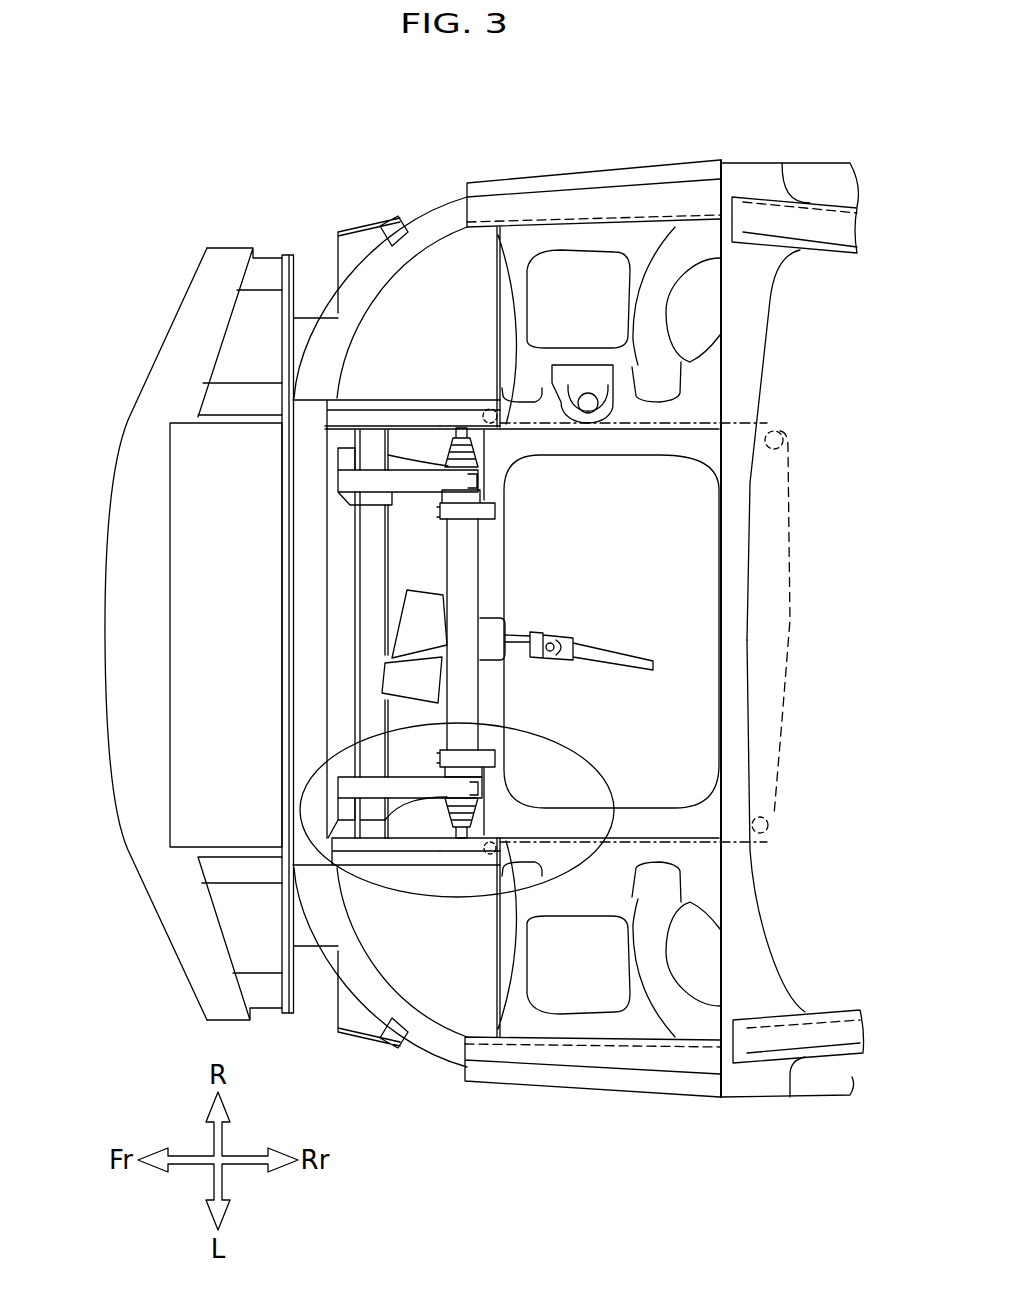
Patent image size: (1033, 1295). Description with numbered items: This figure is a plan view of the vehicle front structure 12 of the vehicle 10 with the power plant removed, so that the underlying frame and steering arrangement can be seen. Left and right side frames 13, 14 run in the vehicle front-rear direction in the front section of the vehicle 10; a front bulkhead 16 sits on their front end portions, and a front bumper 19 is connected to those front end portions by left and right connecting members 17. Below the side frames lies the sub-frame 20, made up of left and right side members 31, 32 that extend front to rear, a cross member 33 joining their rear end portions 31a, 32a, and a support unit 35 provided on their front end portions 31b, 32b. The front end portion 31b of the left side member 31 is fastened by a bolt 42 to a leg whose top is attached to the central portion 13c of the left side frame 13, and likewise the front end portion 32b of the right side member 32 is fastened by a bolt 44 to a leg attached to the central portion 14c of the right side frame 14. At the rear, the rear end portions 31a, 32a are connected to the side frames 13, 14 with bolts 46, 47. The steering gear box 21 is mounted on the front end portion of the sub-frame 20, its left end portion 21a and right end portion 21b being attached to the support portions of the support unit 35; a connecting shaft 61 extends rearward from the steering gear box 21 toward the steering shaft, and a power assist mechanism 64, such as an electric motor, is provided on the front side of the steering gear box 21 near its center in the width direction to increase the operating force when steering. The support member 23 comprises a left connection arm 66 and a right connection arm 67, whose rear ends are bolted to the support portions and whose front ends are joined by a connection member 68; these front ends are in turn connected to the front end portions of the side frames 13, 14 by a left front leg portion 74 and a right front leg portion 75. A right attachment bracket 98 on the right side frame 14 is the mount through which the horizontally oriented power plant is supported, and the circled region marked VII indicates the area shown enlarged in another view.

The vehicle 10 is at (213, 150).
The vehicle front structure 12 is at (380, 195).
The left side frame 13 is at (378, 853).
The central portion of the left side frame 13c is at (468, 858).
The right side frame 14 is at (418, 412).
The central portion of the right side frame 14c is at (468, 413).
The front bulkhead 16 is at (305, 655).
The connecting members 17 is at (217, 397).
The front bumper 19 is at (120, 640).
The sub-frame 20 is at (593, 828).
The steering gear box 21 is at (465, 567).
The left end portion of the steering gear box 21a is at (478, 735).
The right end portion of the steering gear box 21b is at (465, 525).
The support member 23 is at (355, 712).
The left side member 31 is at (633, 828).
The rear end portion of the left side member 31a is at (742, 827).
The front end portion of the left side member 31b is at (509, 856).
The right side member 32 is at (631, 440).
The rear end portion of the right side member 32a is at (758, 443).
The front end portion of the right side member 32b is at (501, 442).
The cross member 33 is at (790, 630).
The support unit 35 is at (475, 828).
The bolt 42 is at (490, 858).
The bolt 44 is at (483, 408).
The bolt 46 is at (762, 822).
The bolt 47 is at (772, 432).
The connecting shaft 61 is at (592, 642).
The power assist mechanism 64 is at (410, 626).
The left connection arm 66 is at (417, 788).
The right connection arm 67 is at (408, 482).
The connection member 68 is at (356, 556).
The left front leg portion 74 is at (340, 866).
The right front leg portion 75 is at (355, 433).
The right attachment bracket 98 is at (580, 388).
The section VII is at (611, 782).